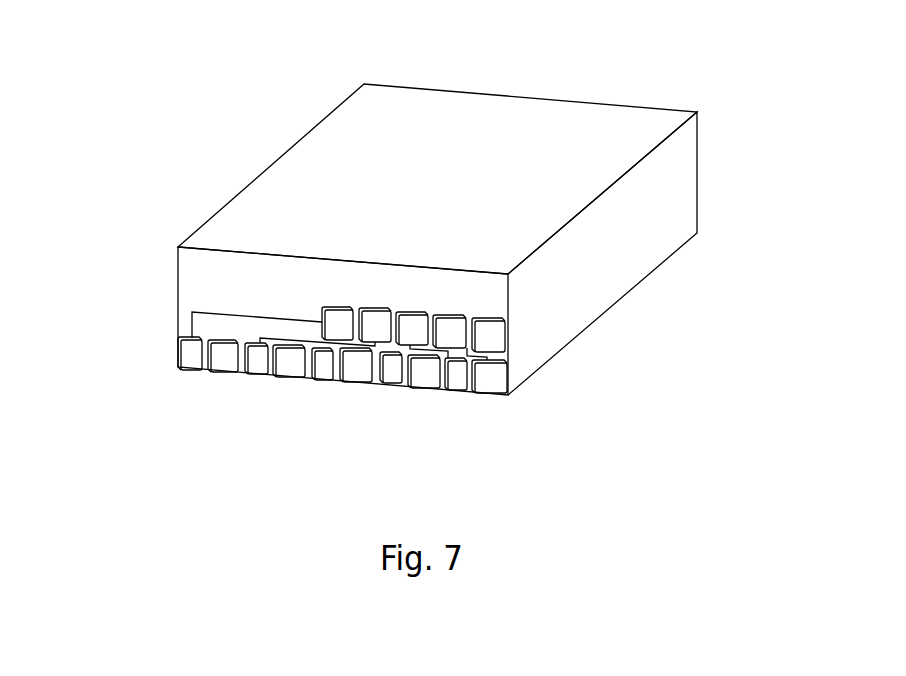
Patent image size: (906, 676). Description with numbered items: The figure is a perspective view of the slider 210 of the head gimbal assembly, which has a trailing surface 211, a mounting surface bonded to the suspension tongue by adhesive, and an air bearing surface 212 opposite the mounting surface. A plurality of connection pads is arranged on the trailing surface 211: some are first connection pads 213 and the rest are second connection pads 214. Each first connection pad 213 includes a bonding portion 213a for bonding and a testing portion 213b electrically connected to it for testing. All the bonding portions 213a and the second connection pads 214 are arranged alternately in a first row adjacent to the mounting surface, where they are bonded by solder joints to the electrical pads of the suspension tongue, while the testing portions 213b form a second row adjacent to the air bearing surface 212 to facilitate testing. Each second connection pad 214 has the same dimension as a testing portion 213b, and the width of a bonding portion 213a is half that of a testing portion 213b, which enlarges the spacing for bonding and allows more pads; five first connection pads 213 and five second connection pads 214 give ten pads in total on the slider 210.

The slider 210 is at (111, 29).
The trailing surface 211 is at (224, 284).
The air bearing surface 212 is at (340, 180).
The first connection pads 213 is at (503, 418).
The bonding portion 213a is at (458, 378).
The testing portion 213b is at (487, 333).
The second connection pads 214 is at (342, 391).